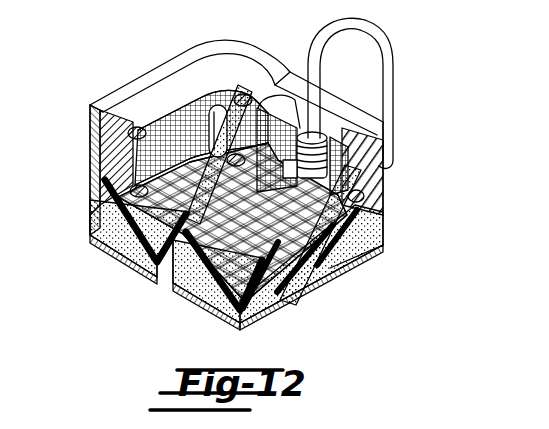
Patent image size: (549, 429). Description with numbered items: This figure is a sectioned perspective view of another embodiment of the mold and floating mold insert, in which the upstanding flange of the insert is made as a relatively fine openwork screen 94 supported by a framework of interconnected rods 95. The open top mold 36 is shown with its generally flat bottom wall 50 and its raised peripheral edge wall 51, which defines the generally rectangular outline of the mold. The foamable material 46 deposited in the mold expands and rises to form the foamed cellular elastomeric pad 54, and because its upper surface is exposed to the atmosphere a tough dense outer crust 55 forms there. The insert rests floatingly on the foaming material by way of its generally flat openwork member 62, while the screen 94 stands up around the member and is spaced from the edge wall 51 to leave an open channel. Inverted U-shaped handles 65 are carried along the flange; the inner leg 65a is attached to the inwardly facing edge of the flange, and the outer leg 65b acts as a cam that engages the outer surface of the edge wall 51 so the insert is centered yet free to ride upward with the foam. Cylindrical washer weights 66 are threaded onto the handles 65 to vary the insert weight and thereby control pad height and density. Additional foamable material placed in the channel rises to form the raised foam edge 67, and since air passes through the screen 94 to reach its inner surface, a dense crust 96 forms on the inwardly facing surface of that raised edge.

The mold 36 is at (143, 268).
The foamable material 46 is at (110, 214).
The bottom wall 50 is at (331, 268).
The peripheral edge wall 51 is at (100, 184).
The foamed cellular elastomeric pad 54 is at (112, 232).
The dense outer crust 55 is at (280, 299).
The openwork member 62 is at (216, 308).
The handles 65 is at (383, 92).
The inner leg 65a is at (320, 88).
The outer leg 65b is at (392, 97).
The weights 66 is at (322, 118).
The raised foam edge 67 is at (368, 160).
The openwork screen 94 is at (178, 110).
The interconnected rods 95 is at (108, 165).
The dense crust 96 is at (249, 92).